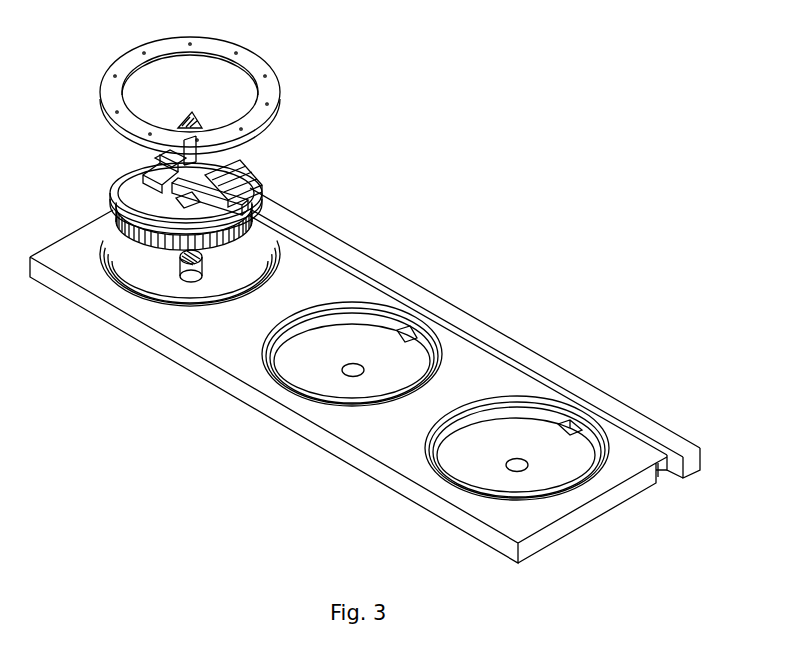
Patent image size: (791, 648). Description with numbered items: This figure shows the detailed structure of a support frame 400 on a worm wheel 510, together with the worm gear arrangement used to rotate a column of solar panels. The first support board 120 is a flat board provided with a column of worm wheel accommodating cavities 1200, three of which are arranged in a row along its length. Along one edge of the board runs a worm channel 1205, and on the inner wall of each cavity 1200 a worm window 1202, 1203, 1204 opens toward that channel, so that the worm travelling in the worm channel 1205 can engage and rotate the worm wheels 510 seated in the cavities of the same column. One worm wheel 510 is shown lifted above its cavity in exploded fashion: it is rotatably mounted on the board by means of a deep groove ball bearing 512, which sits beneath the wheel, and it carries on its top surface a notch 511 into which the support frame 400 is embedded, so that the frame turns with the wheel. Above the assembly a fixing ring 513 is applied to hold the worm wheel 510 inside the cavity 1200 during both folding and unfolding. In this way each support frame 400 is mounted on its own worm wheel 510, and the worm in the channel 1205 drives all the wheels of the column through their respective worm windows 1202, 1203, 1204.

The first support board 120 is at (215, 373).
The worm wheel accommodating cavity 1200 is at (495, 420).
The worm window 1202 is at (250, 243).
The worm window 1203 is at (400, 333).
The worm window 1204 is at (570, 428).
The worm channel 1205 is at (657, 479).
The support frame 400 is at (250, 195).
The worm wheel 510 is at (257, 223).
The notch 511 is at (187, 203).
The deep groove ball bearing 512 is at (184, 268).
The fixing ring 513 is at (262, 82).